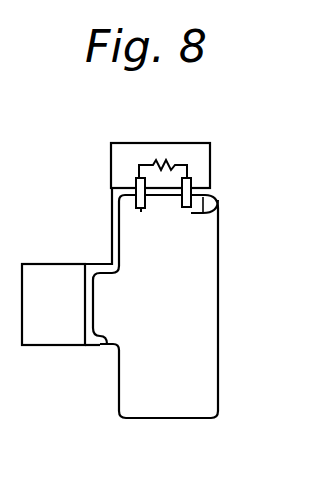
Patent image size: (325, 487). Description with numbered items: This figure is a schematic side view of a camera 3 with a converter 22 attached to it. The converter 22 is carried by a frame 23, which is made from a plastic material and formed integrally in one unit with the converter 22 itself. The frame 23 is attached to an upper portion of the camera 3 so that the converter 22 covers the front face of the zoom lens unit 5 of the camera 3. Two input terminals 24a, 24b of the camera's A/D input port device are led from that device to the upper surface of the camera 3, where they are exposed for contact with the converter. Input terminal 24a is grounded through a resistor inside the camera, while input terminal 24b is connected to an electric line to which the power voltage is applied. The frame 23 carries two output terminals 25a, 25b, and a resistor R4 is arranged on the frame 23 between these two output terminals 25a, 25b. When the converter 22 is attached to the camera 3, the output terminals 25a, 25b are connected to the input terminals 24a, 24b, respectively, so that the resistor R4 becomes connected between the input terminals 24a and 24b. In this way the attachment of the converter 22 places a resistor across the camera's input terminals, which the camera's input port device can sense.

The camera 3 is at (160, 420).
The zoom lens unit 5 is at (105, 345).
The converter 22 is at (37, 346).
The frame 23 is at (111, 165).
The resistor R4 is at (165, 156).
The output terminal 25a is at (136, 181).
The output terminal 25b is at (191, 183).
The input terminal 24a is at (141, 210).
The input terminal 24b is at (217, 207).